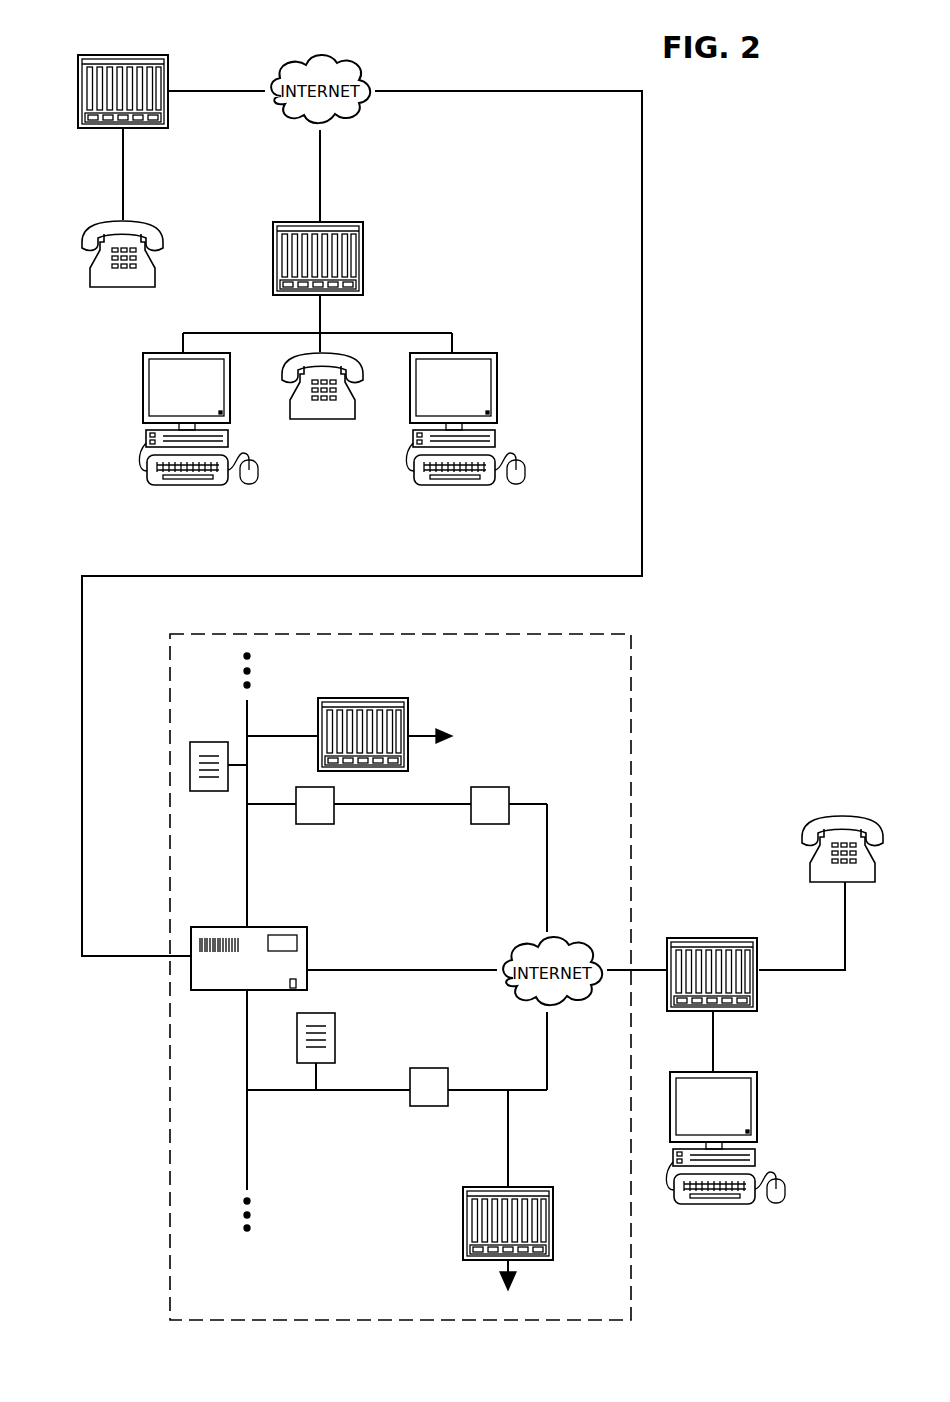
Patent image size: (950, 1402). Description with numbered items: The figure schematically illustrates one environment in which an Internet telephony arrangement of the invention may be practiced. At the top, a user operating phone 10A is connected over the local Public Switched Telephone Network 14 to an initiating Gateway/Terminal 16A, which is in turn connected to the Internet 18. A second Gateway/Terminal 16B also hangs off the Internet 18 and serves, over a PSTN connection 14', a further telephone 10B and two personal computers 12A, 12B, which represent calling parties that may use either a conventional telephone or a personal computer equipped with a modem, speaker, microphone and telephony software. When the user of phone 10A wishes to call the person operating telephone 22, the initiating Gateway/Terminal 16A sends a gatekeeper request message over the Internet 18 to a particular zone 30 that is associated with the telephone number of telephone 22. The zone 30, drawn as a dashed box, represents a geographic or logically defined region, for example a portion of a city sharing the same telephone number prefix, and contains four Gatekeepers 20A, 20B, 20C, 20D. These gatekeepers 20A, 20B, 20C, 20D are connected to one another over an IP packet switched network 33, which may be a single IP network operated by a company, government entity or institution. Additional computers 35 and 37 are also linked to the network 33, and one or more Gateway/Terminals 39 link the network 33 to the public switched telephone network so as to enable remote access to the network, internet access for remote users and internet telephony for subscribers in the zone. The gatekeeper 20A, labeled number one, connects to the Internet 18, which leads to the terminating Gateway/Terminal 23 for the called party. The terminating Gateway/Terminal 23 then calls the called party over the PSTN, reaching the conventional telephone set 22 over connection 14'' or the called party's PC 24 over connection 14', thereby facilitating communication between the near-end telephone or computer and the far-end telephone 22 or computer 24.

The phone 10A is at (122, 288).
The phone 10B is at (322, 420).
The personal computer 12A is at (143, 385).
The personal computer 12B is at (515, 355).
The Public Switched Telephone Network 14 is at (171, 174).
The PSTN 14' is at (495, 683).
The PSTN 14'' is at (828, 951).
The Gateway/Terminal 16A is at (170, 78).
The Gateway/Terminal 16B is at (363, 258).
The Internet 18 is at (345, 52).
The Gatekeeper 20A is at (308, 950).
The Gatekeeper 20B is at (304, 825).
The Gatekeeper 20C is at (492, 825).
The Gatekeeper 20D is at (450, 1070).
The telephone 22 is at (806, 818).
The terminating Gateway/Terminal 23 is at (760, 957).
The PC 24 is at (760, 1128).
The zone 30 is at (632, 728).
The IP packet switched network 33 is at (245, 850).
The computer 35 is at (336, 1058).
The computer 37 is at (222, 740).
The Gateway/Terminal 39 is at (407, 718).